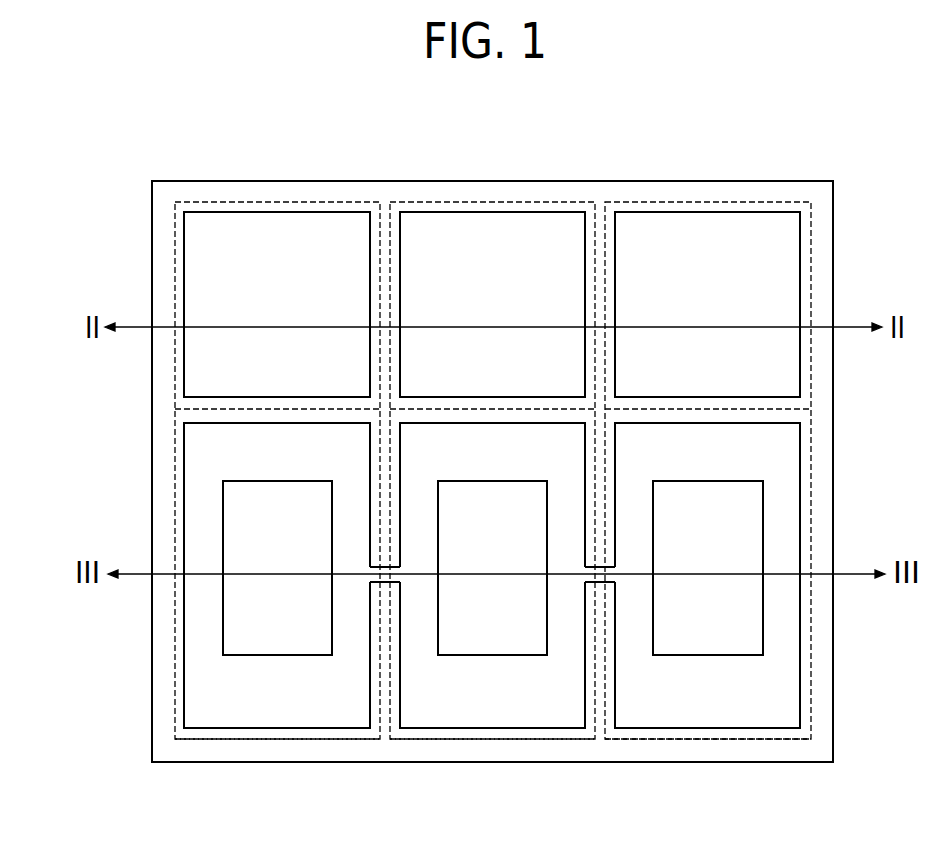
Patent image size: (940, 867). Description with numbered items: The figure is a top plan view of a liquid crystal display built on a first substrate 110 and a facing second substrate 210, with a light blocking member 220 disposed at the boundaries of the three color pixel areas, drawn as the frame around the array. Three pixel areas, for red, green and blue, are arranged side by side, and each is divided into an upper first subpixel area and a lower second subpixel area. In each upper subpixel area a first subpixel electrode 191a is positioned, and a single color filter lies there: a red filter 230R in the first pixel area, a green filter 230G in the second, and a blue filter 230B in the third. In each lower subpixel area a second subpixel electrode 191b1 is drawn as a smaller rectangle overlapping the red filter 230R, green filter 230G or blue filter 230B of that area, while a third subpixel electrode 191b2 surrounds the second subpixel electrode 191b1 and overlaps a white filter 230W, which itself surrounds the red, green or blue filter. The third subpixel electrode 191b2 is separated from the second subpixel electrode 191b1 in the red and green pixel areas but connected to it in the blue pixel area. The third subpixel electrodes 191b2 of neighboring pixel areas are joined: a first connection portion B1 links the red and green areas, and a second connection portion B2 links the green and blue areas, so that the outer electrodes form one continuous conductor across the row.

The first substrate 110 is at (536, 429).
The second substrate 210 is at (536, 429).
The light blocking member 220 is at (805, 180).
The first subpixel electrode 191a is at (433, 472).
The second subpixel electrode 191b1 is at (223, 535).
The third subpixel electrode 191b2 is at (429, 628).
The red filter 230R is at (318, 262).
The green filter 230G is at (540, 262).
The blue filter 230B is at (755, 258).
The white filter 230W is at (277, 693).
The first connection portion B1 is at (382, 588).
The second connection portion B2 is at (600, 588).